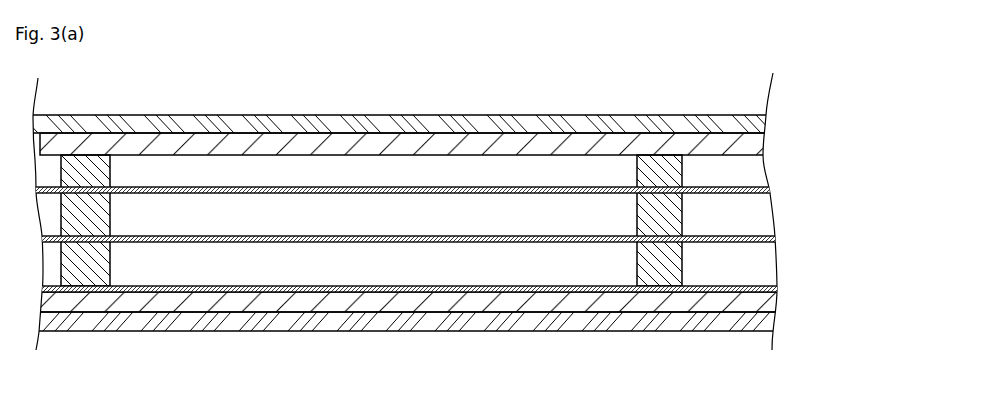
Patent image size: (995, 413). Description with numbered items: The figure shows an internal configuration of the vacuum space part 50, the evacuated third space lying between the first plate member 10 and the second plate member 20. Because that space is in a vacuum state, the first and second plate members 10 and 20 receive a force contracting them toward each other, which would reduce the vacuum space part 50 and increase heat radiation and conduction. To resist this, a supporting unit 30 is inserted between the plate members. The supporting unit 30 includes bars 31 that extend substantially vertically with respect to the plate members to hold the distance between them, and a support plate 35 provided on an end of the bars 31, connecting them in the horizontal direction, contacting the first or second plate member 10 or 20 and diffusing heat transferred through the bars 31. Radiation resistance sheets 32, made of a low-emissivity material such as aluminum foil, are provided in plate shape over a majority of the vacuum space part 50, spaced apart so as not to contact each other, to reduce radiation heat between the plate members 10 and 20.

The first plate member 10 is at (358, 120).
The second plate member 20 is at (486, 333).
The supporting unit 30 is at (452, 221).
The bar 31 is at (682, 213).
The radiation resistance sheet 32 is at (224, 243).
The support plate 35 is at (594, 140).
The vacuum space part 50 is at (512, 212).